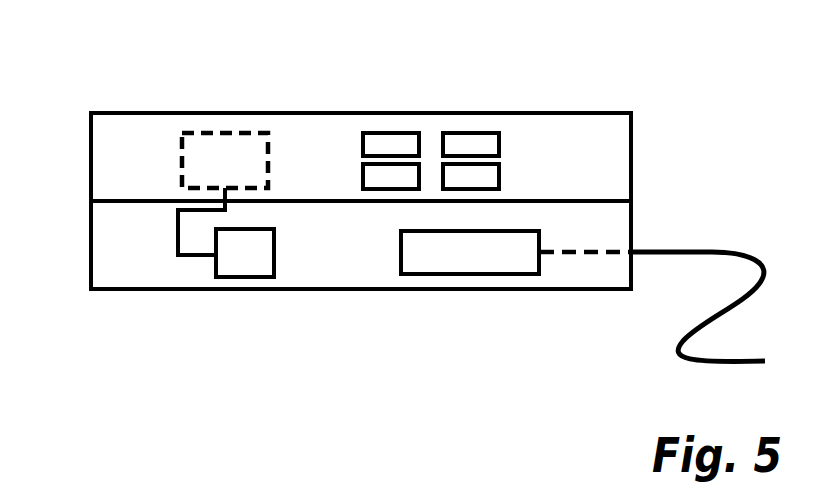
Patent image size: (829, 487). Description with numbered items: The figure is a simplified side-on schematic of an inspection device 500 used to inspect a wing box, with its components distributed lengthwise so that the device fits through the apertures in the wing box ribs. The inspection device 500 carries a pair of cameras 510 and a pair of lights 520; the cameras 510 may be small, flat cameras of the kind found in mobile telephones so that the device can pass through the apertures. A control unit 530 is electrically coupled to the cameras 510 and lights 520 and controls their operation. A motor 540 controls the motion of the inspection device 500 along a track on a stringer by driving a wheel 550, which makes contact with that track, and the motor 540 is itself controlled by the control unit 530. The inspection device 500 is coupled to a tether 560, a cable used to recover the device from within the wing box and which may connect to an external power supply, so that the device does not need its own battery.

The inspection device 500 is at (86, 79).
The cameras 510 is at (361, 135).
The lights 520 is at (361, 176).
The control unit 530 is at (470, 276).
The motor 540 is at (276, 253).
The wheel 550 is at (182, 160).
The tether 560 is at (761, 266).